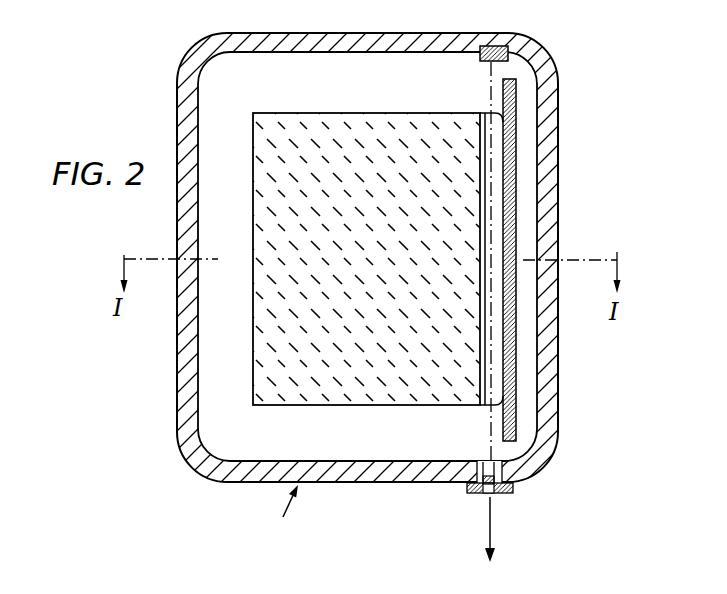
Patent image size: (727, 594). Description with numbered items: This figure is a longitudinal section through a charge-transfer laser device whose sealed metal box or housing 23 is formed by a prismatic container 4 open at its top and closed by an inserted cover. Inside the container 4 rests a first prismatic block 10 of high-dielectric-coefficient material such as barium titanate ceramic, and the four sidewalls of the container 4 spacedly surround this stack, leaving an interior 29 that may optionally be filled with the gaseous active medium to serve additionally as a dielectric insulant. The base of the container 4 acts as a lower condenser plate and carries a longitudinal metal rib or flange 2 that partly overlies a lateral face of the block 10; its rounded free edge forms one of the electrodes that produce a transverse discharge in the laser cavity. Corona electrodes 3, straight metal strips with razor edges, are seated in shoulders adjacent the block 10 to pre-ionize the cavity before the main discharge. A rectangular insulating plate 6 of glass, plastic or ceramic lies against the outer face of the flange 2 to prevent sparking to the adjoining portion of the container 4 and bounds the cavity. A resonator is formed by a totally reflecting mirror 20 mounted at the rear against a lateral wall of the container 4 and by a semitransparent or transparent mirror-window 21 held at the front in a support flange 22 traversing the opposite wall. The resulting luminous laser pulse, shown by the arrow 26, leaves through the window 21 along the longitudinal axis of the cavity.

The longitudinal metal rib or flange 2 is at (492, 381).
The corona electrodes 3 is at (486, 118).
The prismatic container 4 is at (188, 355).
The insulating plate 6 is at (508, 160).
The first prismatic block 10 is at (338, 308).
The totally reflecting mirror 20 is at (500, 47).
The mirror-window 21 is at (515, 488).
The support flange 22 is at (480, 490).
The sealed metal box or housing 23 is at (285, 513).
The arrow 26 is at (494, 514).
The interior 29 is at (219, 111).